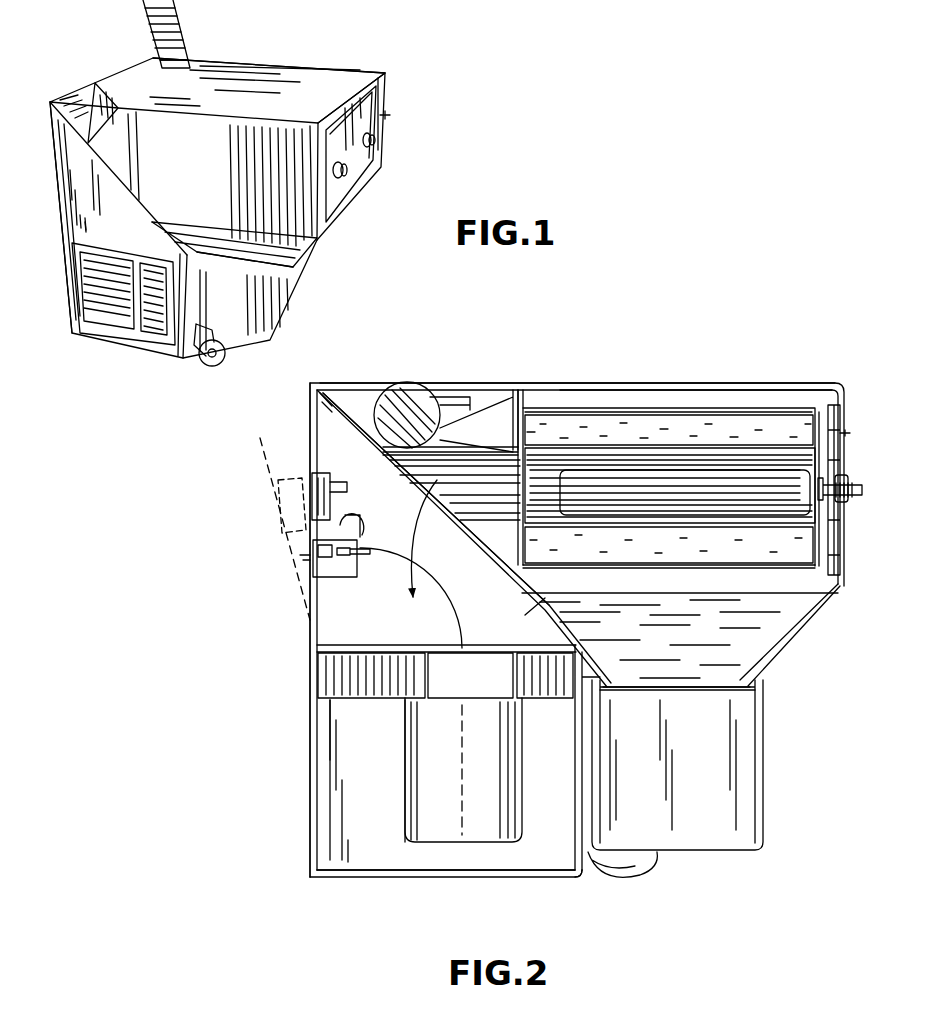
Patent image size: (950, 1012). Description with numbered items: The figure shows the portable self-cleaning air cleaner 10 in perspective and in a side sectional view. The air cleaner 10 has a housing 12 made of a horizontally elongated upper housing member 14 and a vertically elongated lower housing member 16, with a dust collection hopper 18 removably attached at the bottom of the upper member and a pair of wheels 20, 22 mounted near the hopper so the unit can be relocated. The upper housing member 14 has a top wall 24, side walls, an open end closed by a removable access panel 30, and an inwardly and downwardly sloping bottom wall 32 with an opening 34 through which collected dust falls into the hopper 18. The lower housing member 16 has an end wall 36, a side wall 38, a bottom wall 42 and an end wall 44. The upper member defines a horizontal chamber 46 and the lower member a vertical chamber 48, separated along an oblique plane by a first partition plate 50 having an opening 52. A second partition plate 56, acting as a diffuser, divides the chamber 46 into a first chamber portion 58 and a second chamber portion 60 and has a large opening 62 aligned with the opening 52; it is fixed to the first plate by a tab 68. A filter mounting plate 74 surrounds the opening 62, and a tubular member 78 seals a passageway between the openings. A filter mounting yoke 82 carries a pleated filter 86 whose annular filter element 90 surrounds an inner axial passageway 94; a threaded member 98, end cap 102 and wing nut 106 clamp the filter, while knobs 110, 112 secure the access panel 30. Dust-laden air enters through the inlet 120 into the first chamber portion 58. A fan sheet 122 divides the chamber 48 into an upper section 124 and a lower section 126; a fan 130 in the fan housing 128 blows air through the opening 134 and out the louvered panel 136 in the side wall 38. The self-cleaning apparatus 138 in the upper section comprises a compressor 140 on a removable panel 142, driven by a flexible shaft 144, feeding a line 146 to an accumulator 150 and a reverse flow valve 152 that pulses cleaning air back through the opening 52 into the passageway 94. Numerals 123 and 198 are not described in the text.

In FIG. 1, the portable self-cleaning air cleaner 10 is at (392, 62).
In FIG. 2, the portable self-cleaning air cleaner 10 is at (667, 345).
In FIG. 1, the housing 12 is at (112, 65).
In FIG. 1, the upper housing member 14 is at (293, 70).
In FIG. 2, the upper housing member 14 is at (607, 382).
In FIG. 1, the lower housing member 16 is at (62, 210).
In FIG. 2, the lower housing member 16 is at (308, 782).
In FIG. 1, the dust collection hopper 18 is at (308, 286).
In FIG. 2, the dust collection hopper 18 is at (766, 772).
In FIG. 1, the wheel 20 is at (216, 366).
In FIG. 2, the wheel 22 is at (652, 868).
In FIG. 1, the top wall 24 is at (320, 78).
In FIG. 2, the top wall 24 is at (697, 388).
In FIG. 1, the access panel 30 is at (392, 117).
In FIG. 2, the access panel 30 is at (852, 441).
In FIG. 2, the bottom wall 32 is at (572, 638).
In FIG. 2, the opening 34 is at (681, 692).
In FIG. 2, the end wall 36 is at (310, 728).
In FIG. 1, the side wall 38 is at (78, 224).
In FIG. 2, the bottom wall 42 is at (452, 878).
In FIG. 2, the end wall 44 is at (584, 876).
In FIG. 2, the chamber 46 is at (742, 400).
In FIG. 2, the chamber 48 is at (340, 872).
In FIG. 2, the first partition plate 50 is at (500, 562).
In FIG. 2, the opening 52 is at (456, 520).
In FIG. 2, the second partition plate 56 is at (532, 392).
In FIG. 2, the first chamber portion 58 is at (500, 392).
In FIG. 2, the second chamber portion 60 is at (805, 600).
In FIG. 2, the opening 62 is at (450, 435).
In FIG. 2, the tab 68 is at (535, 612).
In FIG. 2, the filter mounting plate 74 is at (575, 396).
In FIG. 2, the tubular member 78 is at (436, 480).
In FIG. 2, the filter mounting yoke 82 is at (670, 485).
In FIG. 2, the filter 86 is at (767, 425).
In FIG. 2, the annular filter element 90 is at (727, 568).
In FIG. 2, the inner axial passageway 94 is at (780, 522).
In FIG. 2, the threaded member 98 is at (858, 489).
In FIG. 2, the end cap 102 is at (842, 549).
In FIG. 2, the wing nut 106 is at (685, 492).
In FIG. 1, the internally threaded knob 110 is at (346, 178).
In FIG. 2, the internally threaded knob 110 is at (850, 504).
In FIG. 1, the internally threaded knob 112 is at (376, 144).
In FIG. 1, the dust-laden air inlet 120 is at (185, 18).
In FIG. 2, the dust-laden air inlet 120 is at (428, 384).
In FIG. 1, the fan sheet 122 is at (198, 54).
In FIG. 2, the fan sheet 122 is at (478, 388).
In FIG. 2, the horizontal shelf 123 is at (404, 643).
In FIG. 2, the upper section 124 is at (318, 409).
In FIG. 2, the lower section 126 is at (326, 824).
In FIG. 2, the fan housing 128 is at (500, 675).
In FIG. 2, the fan 130 is at (403, 760).
In FIG. 2, the opening 134 is at (318, 674).
In FIG. 1, the louvered panel 136 is at (122, 322).
In FIG. 2, the filter self-cleaning apparatus 138 is at (300, 561).
In FIG. 2, the compressor 140 is at (362, 512).
In FIG. 2, the panel 142 is at (308, 593).
In FIG. 2, the flexible shaft 144 is at (458, 614).
In FIG. 2, the line 146 is at (365, 531).
In FIG. 2, the accumulator 150 is at (345, 578).
In FIG. 2, the reverse flow valve 152 is at (345, 459).
In FIG. 2, the air duct 198 is at (463, 770).